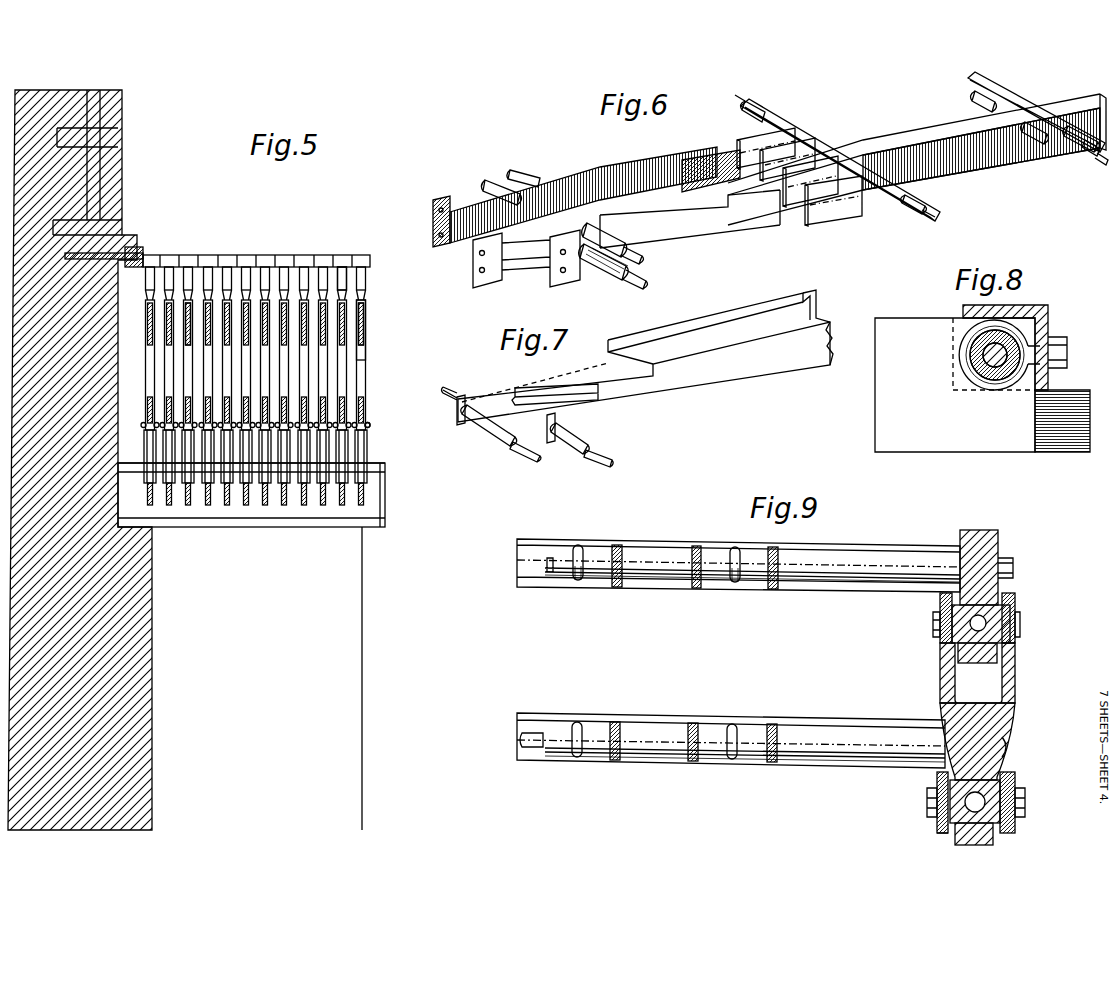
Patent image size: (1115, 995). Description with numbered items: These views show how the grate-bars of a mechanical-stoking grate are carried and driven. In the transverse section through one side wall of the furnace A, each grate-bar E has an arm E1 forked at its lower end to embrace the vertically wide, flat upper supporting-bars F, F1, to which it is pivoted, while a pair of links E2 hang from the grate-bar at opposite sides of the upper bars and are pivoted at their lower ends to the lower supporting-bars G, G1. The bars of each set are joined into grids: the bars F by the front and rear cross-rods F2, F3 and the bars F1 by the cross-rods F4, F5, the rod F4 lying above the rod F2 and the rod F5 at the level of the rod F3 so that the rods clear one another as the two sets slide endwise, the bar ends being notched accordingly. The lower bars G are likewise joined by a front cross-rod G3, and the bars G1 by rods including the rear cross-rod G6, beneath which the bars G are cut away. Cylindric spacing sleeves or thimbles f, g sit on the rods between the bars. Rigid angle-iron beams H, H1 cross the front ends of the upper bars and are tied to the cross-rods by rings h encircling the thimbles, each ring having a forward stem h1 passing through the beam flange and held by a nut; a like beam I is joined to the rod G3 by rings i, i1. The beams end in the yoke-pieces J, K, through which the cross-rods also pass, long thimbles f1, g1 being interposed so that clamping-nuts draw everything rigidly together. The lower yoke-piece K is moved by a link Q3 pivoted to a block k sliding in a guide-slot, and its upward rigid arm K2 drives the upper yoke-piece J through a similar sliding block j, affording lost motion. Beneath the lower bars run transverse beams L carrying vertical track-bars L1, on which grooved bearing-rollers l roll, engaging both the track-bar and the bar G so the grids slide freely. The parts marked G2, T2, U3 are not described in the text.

In FIG. 5, the side wall of the furnace A is at (152, 608).
In FIG. 5, the grate-bar E is at (265, 248).
In FIG. 5, the arm E1 is at (343, 280).
In FIG. 5, the link E2 is at (150, 345).
In FIG. 5, the upper supporting-bar F is at (343, 337).
In FIG. 6, the upper supporting-bar F is at (830, 215).
In FIG. 8, the upper supporting-bar F is at (890, 421).
In FIG. 5, the upper supporting-bar F1 is at (370, 310).
In FIG. 6, the upper supporting-bar F1 is at (857, 127).
In FIG. 9, the upper supporting-bar F1 is at (785, 610).
In FIG. 5, the front cross-rod F2 is at (370, 353).
In FIG. 6, the front cross-rod F2 is at (1100, 160).
In FIG. 8, the front cross-rod F2 is at (990, 380).
In FIG. 9, the front cross-rod F2 is at (1013, 568).
In FIG. 6, the rear cross-rod F3 is at (635, 280).
In FIG. 6, the front cross-rod F4 is at (575, 197).
In FIG. 6, the rear cross-rod F5 is at (615, 245).
In FIG. 7, the lower supporting-bar G is at (630, 335).
In FIG. 9, the lower supporting-bar G is at (772, 762).
In FIG. 5, the lower supporting-bar G1 is at (340, 407).
In FIG. 7, the lower supporting-bar G1 is at (578, 384).
In FIG. 7, the roller pin G2 is at (612, 455).
In FIG. 9, the front cross-rod G3 is at (1007, 750).
In FIG. 7, the rear cross-rod G6 is at (522, 452).
In FIG. 6, the beam H is at (1065, 128).
In FIG. 8, the beam H is at (1040, 307).
In FIG. 9, the beam H is at (897, 538).
In FIG. 6, the beam H1 is at (833, 142).
In FIG. 9, the beam I is at (870, 712).
In FIG. 9, the upper yoke-piece J is at (998, 535).
In FIG. 9, the lower yoke-piece K is at (985, 735).
In FIG. 9, the upwardly-extending rigid arm K2 is at (1015, 665).
In FIG. 5, the transverse beam L is at (305, 515).
In FIG. 5, the track-bar L1 is at (345, 510).
In FIG. 9, the link Q3 is at (1015, 795).
In FIG. 9, the clevis block T2 is at (1010, 643).
In FIG. 9, the lower plate U3 is at (948, 830).
In FIG. 6, the spacing sleeve or thimble f is at (628, 278).
In FIG. 8, the spacing sleeve or thimble f is at (985, 355).
In FIG. 9, the spacing sleeve or thimble f is at (755, 570).
In FIG. 9, the long thimble f1 is at (860, 580).
In FIG. 7, the spacing sleeve or thimble g is at (487, 420).
In FIG. 9, the spacing sleeve or thimble g is at (705, 752).
In FIG. 9, the long thimble g1 is at (847, 760).
In FIG. 6, the ring or eye h is at (1040, 150).
In FIG. 8, the ring or eye h is at (975, 370).
In FIG. 9, the ring or eye h is at (578, 580).
In FIG. 8, the forward extension or stem h1 is at (1067, 352).
In FIG. 9, the ring i is at (577, 757).
In FIG. 9, the ring i1 is at (732, 759).
In FIG. 9, the block j is at (1012, 615).
In FIG. 9, the block k is at (990, 835).
In FIG. 5, the bearing-roller l is at (365, 445).